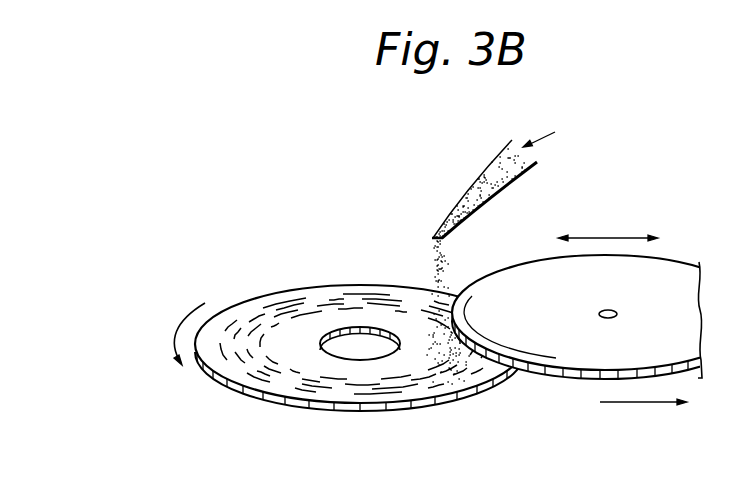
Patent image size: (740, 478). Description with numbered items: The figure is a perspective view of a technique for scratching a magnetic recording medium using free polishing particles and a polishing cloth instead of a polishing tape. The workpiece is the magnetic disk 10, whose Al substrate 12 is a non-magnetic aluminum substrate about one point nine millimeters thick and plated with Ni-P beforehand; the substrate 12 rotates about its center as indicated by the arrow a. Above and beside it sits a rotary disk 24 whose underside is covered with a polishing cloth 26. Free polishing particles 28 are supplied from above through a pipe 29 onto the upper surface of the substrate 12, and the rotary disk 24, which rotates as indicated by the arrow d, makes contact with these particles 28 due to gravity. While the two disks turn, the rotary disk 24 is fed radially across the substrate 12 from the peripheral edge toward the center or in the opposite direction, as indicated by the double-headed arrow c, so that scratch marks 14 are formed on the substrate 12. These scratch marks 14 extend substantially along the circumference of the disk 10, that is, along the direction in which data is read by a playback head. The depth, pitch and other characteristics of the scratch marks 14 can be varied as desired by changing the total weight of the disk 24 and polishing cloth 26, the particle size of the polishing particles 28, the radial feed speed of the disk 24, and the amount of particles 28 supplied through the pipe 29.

The magnetic disk 10 is at (238, 272).
The Al substrate 12 is at (255, 395).
The scratch marks 14 is at (438, 382).
The rotary disk 24 is at (567, 353).
The polishing cloth 26 is at (583, 380).
The free polishing particles 28 is at (440, 269).
The pipe 29 is at (498, 183).
The arrow a is at (183, 323).
The arrow c is at (606, 237).
The arrow d is at (650, 404).